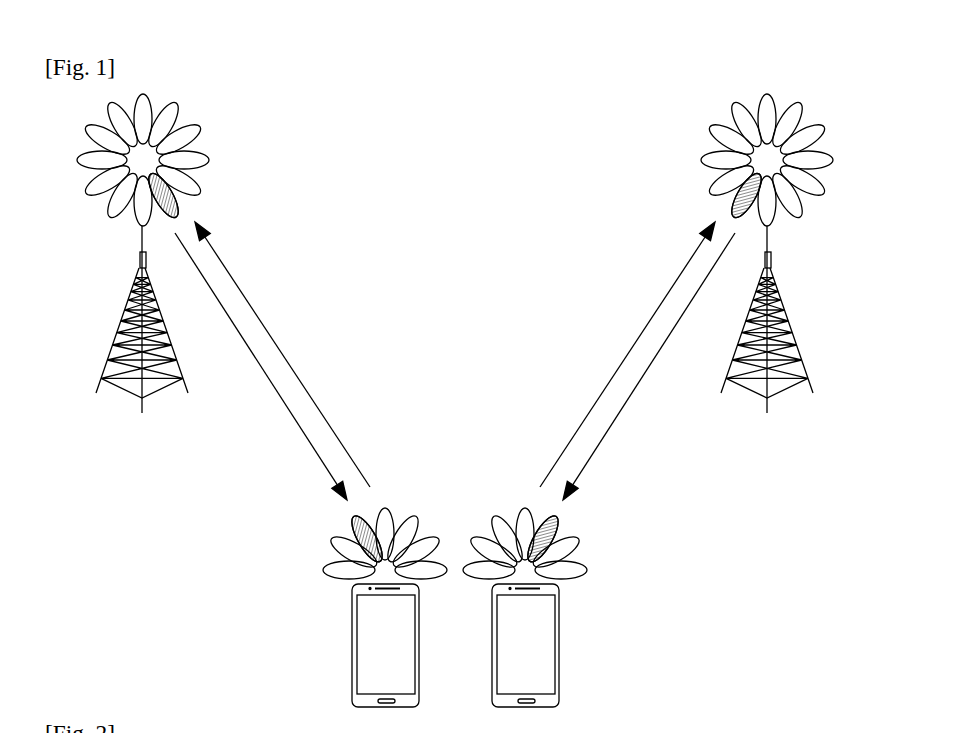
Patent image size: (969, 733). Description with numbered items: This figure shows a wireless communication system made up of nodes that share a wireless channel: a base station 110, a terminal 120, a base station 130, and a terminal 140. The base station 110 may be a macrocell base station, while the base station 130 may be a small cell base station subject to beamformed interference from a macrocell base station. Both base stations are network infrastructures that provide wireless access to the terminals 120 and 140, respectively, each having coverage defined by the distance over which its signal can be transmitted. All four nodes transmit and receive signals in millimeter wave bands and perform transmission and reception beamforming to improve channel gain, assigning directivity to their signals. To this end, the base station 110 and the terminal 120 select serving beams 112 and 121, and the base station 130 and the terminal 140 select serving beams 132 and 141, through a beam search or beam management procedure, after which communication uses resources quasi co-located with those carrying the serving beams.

The base station 110 is at (122, 316).
The serving beam 112 is at (183, 213).
The terminal 120 is at (352, 618).
The serving beam 121 is at (352, 525).
The base station 130 is at (788, 317).
The serving beam 132 is at (727, 214).
The terminal 140 is at (558, 618).
The serving beam 141 is at (558, 525).